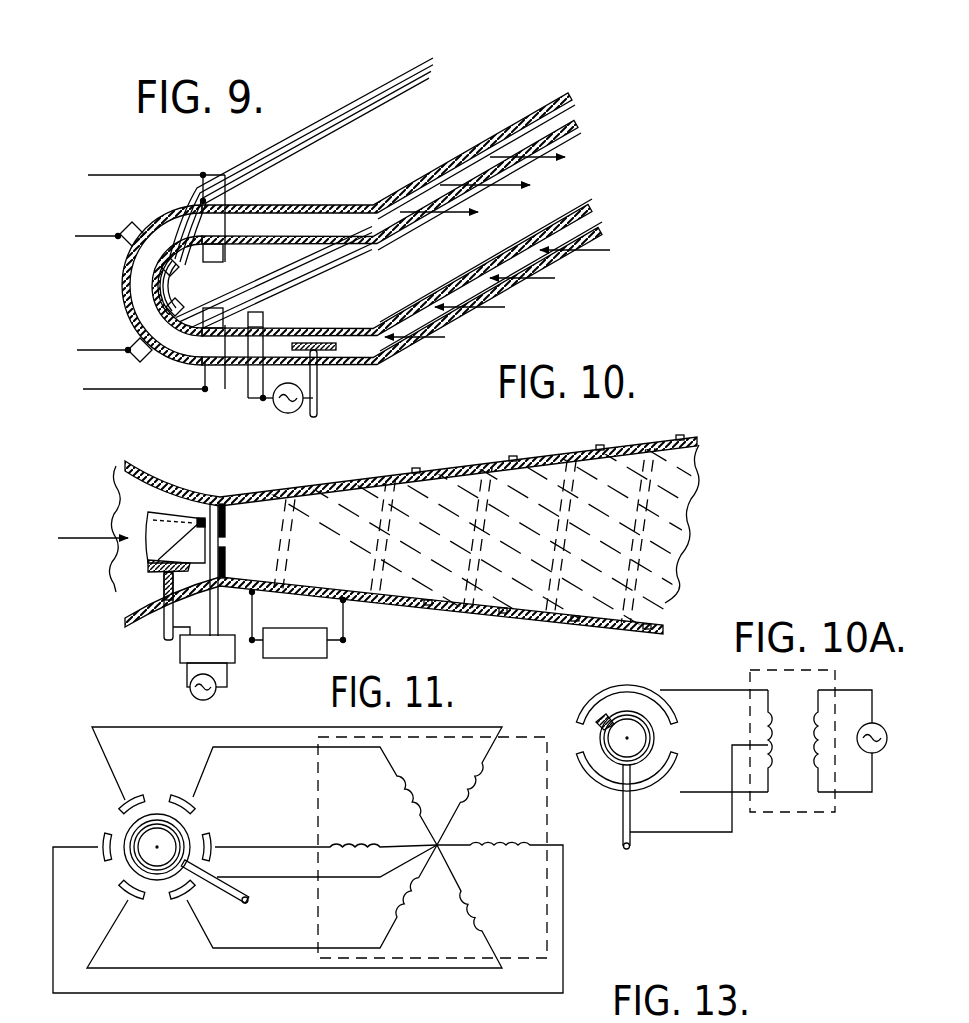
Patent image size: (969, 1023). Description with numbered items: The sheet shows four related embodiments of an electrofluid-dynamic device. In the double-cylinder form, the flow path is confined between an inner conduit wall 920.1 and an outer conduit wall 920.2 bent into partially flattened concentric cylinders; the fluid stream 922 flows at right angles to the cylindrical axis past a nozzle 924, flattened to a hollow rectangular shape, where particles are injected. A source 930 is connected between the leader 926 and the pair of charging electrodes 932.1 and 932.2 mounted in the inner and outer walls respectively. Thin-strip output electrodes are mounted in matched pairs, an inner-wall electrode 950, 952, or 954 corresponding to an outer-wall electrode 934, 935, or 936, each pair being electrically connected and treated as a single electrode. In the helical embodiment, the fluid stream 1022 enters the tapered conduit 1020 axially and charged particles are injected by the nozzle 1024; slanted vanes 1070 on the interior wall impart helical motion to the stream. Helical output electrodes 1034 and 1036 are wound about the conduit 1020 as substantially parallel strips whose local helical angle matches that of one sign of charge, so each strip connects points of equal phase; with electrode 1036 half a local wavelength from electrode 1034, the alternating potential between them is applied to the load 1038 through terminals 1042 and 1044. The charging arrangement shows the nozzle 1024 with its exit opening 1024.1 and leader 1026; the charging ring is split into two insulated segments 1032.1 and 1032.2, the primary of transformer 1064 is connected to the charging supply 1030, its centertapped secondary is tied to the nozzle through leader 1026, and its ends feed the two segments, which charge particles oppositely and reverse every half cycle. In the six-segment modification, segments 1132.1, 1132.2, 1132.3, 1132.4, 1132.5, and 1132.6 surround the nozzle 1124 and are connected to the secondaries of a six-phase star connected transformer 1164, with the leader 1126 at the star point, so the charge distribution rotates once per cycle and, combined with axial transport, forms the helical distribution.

In FIG. 9, the inner conduit wall 920.1 is at (498, 291).
In FIG. 9, the outer conduit wall 920.2 is at (441, 314).
In FIG. 9, the fluid stream 922 is at (454, 204).
In FIG. 9, the nozzle 924 is at (328, 353).
In FIG. 9, the leader 926 is at (322, 392).
In FIG. 9, the source 930 is at (286, 413).
In FIG. 9, the charging electrode 932.1 is at (264, 325).
In FIG. 9, the charging electrode 932.2 is at (252, 369).
In FIG. 9, the outer wall electrode 934 is at (198, 366).
In FIG. 9, the outer wall electrode 935 is at (131, 345).
In FIG. 9, the outer wall electrode 936 is at (151, 225).
In FIG. 9, the inner wall electrode 950 is at (293, 272).
In FIG. 9, the inner wall electrode 952 is at (167, 304).
In FIG. 9, the inner wall electrode 954 is at (162, 263).
In FIG. 10, the conduit 1020 is at (662, 626).
In FIG. 10, the fluid stream 1022 is at (95, 515).
In FIG. 10, the nozzle 1024 is at (176, 508).
In FIG. 10A, the nozzle 1024 is at (600, 700).
In FIG. 10A, the exit opening 1024.1 is at (600, 722).
In FIG. 10A, the leader 1026 is at (622, 832).
In FIG. 10, the charging supply 1030 is at (192, 691).
In FIG. 10A, the charging supply 1030 is at (882, 750).
In FIG. 10, the charging electrode segment 1032.1 is at (228, 508).
In FIG. 10A, the charging electrode segment 1032.1 is at (636, 687).
In FIG. 10, the charging electrode segment 1032.2 is at (225, 548).
In FIG. 10A, the charging electrode segment 1032.2 is at (600, 786).
In FIG. 10, the helical output electrode 1034 is at (508, 459).
In FIG. 10, the helical output electrode 1036 is at (343, 608).
In FIG. 10, the load 1038 is at (318, 658).
In FIG. 10, the terminal 1042 is at (250, 642).
In FIG. 10, the terminal 1044 is at (343, 640).
In FIG. 10, the transformer 1064 is at (190, 654).
In FIG. 10A, the transformer 1064 is at (829, 676).
In FIG. 10, the slanted vanes 1070 is at (668, 568).
In FIG. 11, the nozzle 1124 is at (188, 830).
In FIG. 11, the leader 1126 is at (247, 896).
In FIG. 11, the charging segment 1132.1 is at (120, 800).
In FIG. 11, the charging segment 1132.2 is at (194, 796).
In FIG. 11, the charging segment 1132.3 is at (214, 838).
In FIG. 11, the charging segment 1132.4 is at (176, 902).
In FIG. 11, the charging segment 1132.5 is at (122, 890).
In FIG. 11, the charging segment 1132.6 is at (106, 838).
In FIG. 11, the six-phase star connected transformer 1164 is at (540, 910).